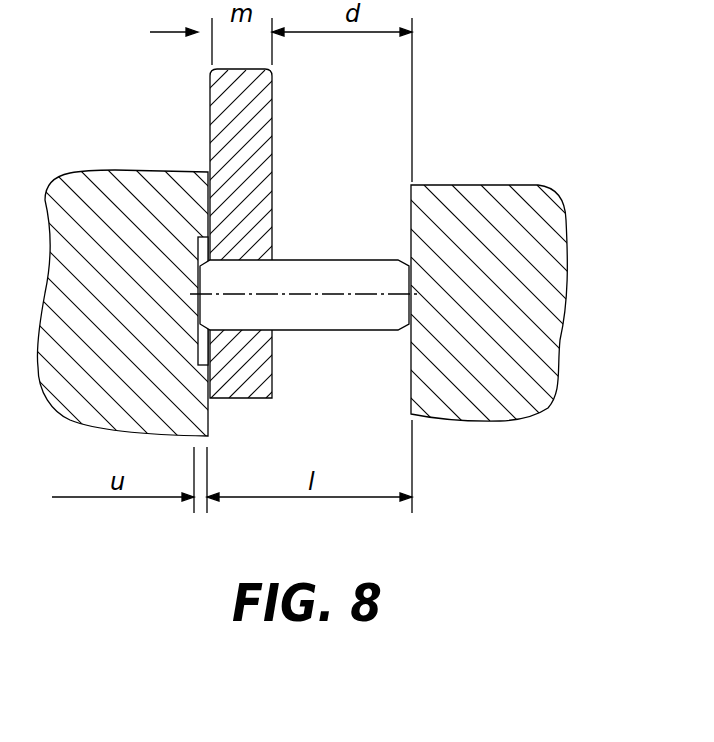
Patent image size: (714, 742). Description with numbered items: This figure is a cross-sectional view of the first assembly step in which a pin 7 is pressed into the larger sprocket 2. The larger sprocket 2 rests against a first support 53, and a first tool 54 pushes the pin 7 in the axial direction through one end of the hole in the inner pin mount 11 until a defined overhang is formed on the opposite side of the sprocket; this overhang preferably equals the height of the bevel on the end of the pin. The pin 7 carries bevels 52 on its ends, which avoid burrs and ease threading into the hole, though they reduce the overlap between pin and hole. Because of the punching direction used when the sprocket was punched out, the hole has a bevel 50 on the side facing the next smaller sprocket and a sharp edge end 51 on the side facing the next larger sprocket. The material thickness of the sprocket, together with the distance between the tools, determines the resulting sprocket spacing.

The larger sprocket 2 is at (250, 96).
The pin 7 is at (340, 277).
The inner pin mount 11 is at (253, 353).
The bevel 50 is at (262, 256).
The sharp edge end 51 is at (218, 347).
The bevel 52 is at (405, 328).
The first support 53 is at (110, 190).
The first tool 54 is at (482, 203).